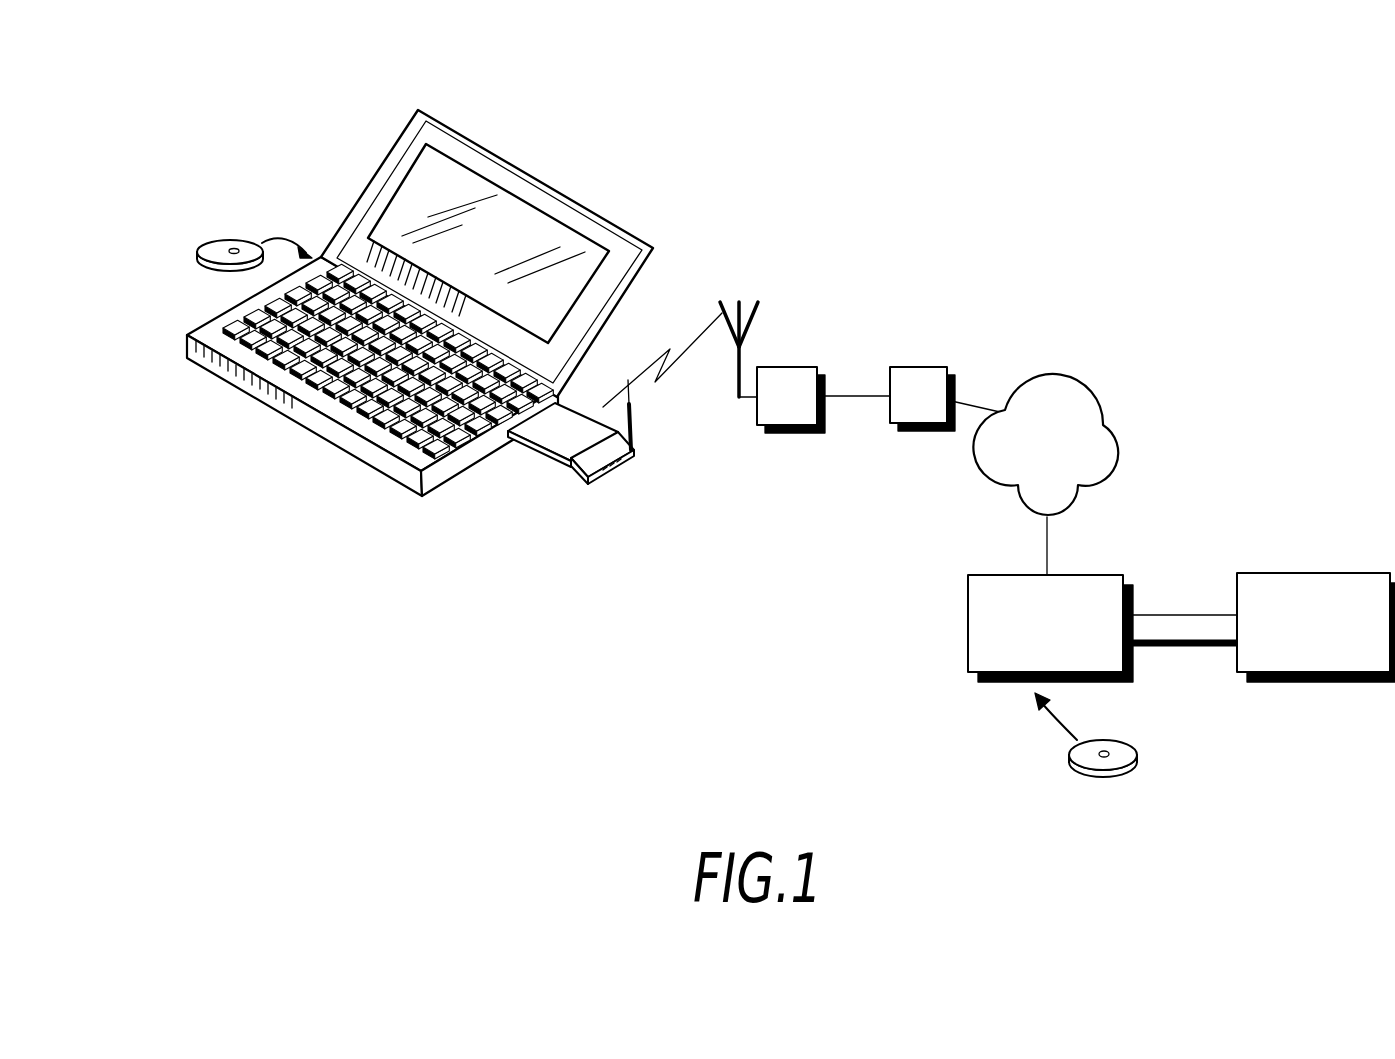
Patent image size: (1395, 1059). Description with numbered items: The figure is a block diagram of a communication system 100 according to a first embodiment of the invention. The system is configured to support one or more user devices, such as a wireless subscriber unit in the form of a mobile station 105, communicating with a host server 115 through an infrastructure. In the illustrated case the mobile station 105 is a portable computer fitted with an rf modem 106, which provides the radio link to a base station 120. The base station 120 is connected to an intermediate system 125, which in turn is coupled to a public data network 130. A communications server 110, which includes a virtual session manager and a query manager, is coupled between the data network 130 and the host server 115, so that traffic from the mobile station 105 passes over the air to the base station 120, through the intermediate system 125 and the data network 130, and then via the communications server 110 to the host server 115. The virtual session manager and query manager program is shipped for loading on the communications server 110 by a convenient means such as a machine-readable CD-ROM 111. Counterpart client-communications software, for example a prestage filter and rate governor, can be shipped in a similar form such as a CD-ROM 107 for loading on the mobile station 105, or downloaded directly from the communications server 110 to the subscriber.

The communication system 100 is at (1297, 312).
The mobile station 105 is at (388, 480).
The rf modem 106 is at (608, 469).
The CD-ROM 107 is at (248, 277).
The communications server 110 is at (968, 625).
The CD-ROM 111 is at (1137, 760).
The host server 115 is at (1295, 573).
The base station 120 is at (770, 434).
The intermediate system 125 is at (923, 433).
The data network 130 is at (1100, 400).